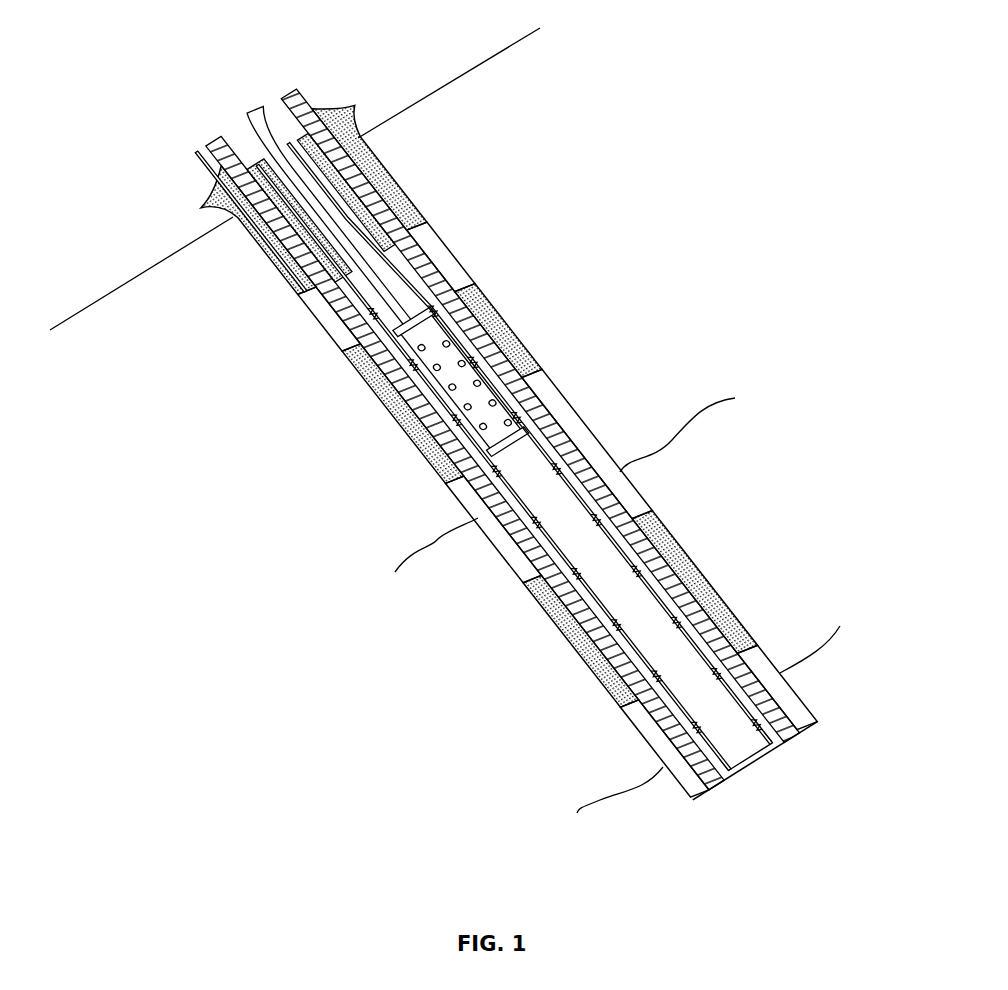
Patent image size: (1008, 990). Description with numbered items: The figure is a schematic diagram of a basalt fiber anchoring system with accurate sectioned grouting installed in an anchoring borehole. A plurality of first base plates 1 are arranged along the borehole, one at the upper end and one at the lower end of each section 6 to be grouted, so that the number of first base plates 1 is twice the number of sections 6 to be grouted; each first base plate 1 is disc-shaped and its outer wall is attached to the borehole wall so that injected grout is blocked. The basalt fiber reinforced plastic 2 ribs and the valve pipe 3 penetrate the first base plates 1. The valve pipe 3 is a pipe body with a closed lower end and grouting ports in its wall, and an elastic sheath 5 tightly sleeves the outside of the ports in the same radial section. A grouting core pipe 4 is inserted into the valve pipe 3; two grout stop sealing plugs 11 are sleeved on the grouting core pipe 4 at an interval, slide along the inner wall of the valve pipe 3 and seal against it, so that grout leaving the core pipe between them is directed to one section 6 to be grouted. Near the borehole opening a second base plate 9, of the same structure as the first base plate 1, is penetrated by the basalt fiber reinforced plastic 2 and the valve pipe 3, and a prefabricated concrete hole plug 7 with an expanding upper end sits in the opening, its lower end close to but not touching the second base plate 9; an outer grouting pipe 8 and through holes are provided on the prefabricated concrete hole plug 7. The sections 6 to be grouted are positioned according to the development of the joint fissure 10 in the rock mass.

The first base plate 1 is at (362, 524).
The basalt fiber reinforced plastic 2 is at (300, 98).
The valve pipe 3 is at (640, 572).
The grouting core pipe 4 is at (448, 370).
The elastic sheath 5 is at (637, 667).
The section to be grouted 6 is at (708, 582).
The prefabricated concrete hole plug 7 is at (235, 218).
The outer grouting pipe 8 is at (257, 260).
The second base plate 9 is at (430, 242).
The joint fissure 10 is at (680, 388).
The grout stop sealing plug 11 is at (533, 423).